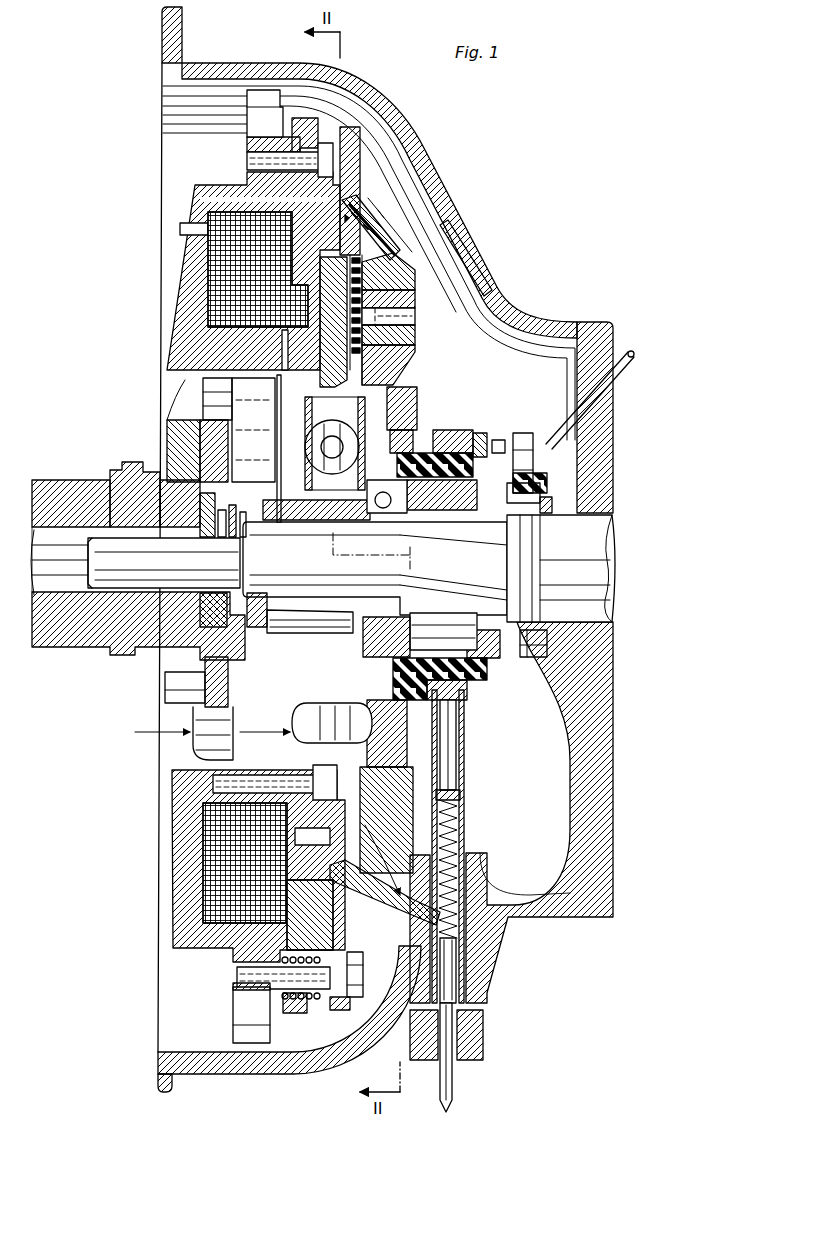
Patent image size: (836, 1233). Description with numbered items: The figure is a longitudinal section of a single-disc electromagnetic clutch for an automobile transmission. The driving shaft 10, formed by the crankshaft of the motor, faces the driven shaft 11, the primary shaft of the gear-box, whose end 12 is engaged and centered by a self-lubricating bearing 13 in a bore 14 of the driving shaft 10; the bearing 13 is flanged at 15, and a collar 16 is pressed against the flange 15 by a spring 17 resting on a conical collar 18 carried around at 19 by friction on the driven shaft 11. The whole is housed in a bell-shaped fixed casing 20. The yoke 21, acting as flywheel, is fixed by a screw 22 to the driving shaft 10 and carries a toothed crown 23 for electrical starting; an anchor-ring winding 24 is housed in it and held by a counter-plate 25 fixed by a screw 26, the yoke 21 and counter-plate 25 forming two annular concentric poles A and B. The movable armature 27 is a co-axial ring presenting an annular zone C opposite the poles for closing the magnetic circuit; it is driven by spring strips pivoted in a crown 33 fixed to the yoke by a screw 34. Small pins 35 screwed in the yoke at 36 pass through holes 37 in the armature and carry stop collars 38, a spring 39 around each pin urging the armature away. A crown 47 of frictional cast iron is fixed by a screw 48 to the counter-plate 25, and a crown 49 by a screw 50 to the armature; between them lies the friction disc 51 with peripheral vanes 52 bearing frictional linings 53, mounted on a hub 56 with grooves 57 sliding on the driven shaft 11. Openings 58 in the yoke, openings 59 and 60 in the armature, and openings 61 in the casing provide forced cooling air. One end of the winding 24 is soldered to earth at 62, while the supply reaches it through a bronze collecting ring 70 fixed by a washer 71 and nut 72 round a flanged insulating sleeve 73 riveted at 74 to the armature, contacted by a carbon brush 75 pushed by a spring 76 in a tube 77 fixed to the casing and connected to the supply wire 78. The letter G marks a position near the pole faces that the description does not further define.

The driving shaft 10 is at (85, 640).
The driven shaft 11 is at (598, 595).
The end of the driven shaft 12 is at (114, 548).
The self-lubricating bearing 13 is at (150, 530).
The bore 14 is at (70, 530).
The flange 15 is at (190, 527).
The collar 16 is at (222, 512).
The spring 17 is at (234, 518).
The conical collar 18 is at (252, 522).
The friction seat 19 is at (250, 528).
The fixed casing 20 is at (485, 282).
The yoke 21 is at (186, 346).
The screw 22 is at (165, 688).
The toothed crown 23 is at (245, 108).
The winding 24 is at (216, 274).
The counter-plate 25 is at (277, 394).
The screw 26 is at (240, 790).
The movable armature 27 is at (357, 130).
The crown 33 is at (304, 118).
The screw 34 is at (246, 160).
The small pin 35 is at (306, 1010).
The screwed seat 36 is at (240, 976).
The hole 37 is at (338, 1004).
The stop collar 38 is at (357, 966).
The spring 39 is at (287, 1004).
The crown 47 is at (320, 390).
The screw 48 is at (272, 860).
The crown 49 is at (417, 343).
The screw 50 is at (415, 317).
The friction disc 51 is at (410, 382).
The peripheral vanes 52 is at (412, 293).
The frictional lining 53 is at (408, 270).
The hub 56 is at (293, 634).
The grooves 57 is at (272, 626).
The openings 58 is at (192, 396).
The openings 59 is at (415, 402).
The openings 60 is at (455, 262).
The openings 61 is at (452, 218).
The earth soldering point 62 is at (230, 396).
The collecting ring 70 is at (463, 440).
The washer 71 is at (482, 436).
The nut 72 is at (506, 446).
The flanged insulating sleeve 73 is at (441, 452).
The rivets 74 is at (414, 440).
The brush 75 is at (462, 760).
The spring 76 is at (461, 844).
The tube 77 is at (468, 851).
The wire 78 is at (455, 1089).
The pole A is at (349, 200).
The pole B is at (384, 218).
The annular zone C is at (369, 226).
The gap G is at (357, 215).